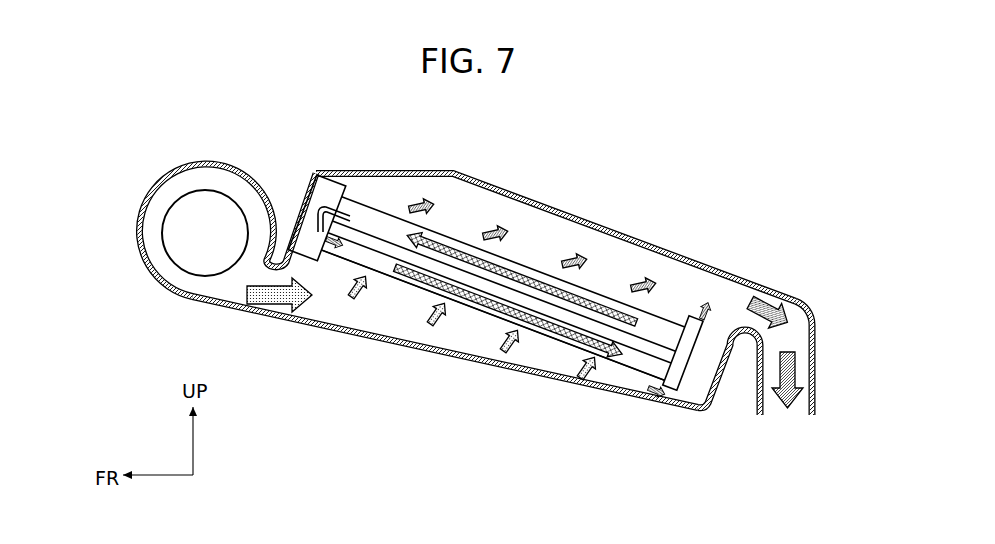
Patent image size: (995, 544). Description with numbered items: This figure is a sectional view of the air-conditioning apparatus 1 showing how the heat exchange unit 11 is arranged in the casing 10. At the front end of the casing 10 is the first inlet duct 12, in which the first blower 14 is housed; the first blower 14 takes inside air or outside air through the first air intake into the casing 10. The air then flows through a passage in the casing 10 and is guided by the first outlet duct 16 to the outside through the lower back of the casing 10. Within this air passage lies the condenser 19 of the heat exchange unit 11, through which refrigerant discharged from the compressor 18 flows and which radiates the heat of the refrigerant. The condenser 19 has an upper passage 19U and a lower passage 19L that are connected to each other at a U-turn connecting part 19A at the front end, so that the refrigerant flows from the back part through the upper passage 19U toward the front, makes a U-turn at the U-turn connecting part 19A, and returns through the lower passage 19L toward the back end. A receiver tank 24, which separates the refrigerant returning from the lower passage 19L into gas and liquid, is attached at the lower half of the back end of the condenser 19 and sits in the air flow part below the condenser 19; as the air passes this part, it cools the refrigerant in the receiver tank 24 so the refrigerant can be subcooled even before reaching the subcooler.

The air-conditioning apparatus 1 is at (626, 189).
The casing 10 is at (656, 245).
The heat exchange unit 11 is at (620, 364).
The first inlet duct 12 is at (221, 162).
The first blower 14 is at (182, 246).
The first outlet duct 16 is at (816, 383).
The compressor 18 is at (753, 358).
The condenser 19 is at (363, 197).
The U-turn connecting part 19A is at (317, 198).
The upper passage 19U is at (388, 217).
The lower passage 19L is at (388, 262).
The receiver tank 24 is at (692, 385).